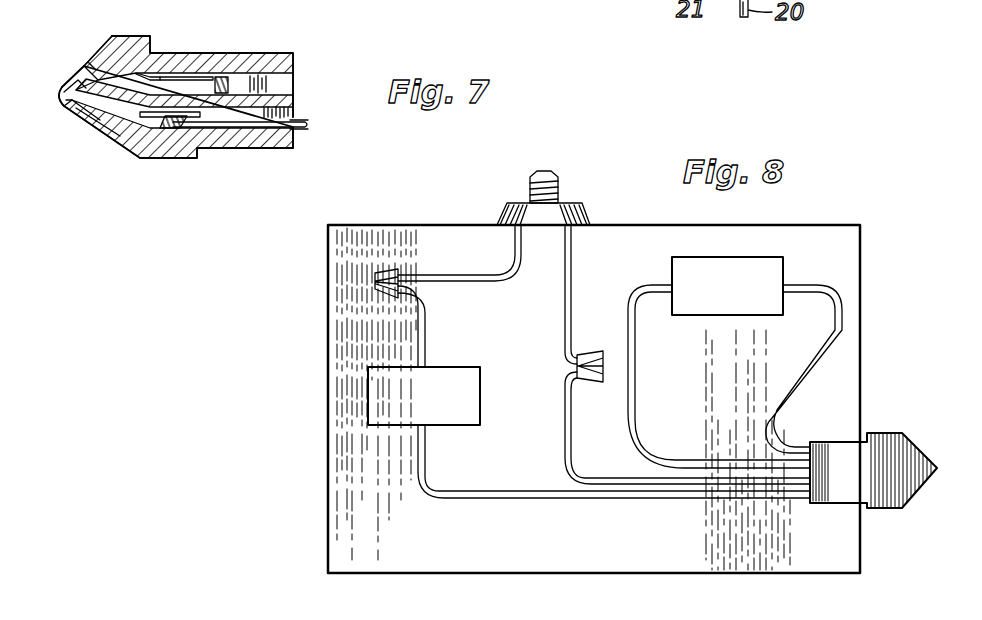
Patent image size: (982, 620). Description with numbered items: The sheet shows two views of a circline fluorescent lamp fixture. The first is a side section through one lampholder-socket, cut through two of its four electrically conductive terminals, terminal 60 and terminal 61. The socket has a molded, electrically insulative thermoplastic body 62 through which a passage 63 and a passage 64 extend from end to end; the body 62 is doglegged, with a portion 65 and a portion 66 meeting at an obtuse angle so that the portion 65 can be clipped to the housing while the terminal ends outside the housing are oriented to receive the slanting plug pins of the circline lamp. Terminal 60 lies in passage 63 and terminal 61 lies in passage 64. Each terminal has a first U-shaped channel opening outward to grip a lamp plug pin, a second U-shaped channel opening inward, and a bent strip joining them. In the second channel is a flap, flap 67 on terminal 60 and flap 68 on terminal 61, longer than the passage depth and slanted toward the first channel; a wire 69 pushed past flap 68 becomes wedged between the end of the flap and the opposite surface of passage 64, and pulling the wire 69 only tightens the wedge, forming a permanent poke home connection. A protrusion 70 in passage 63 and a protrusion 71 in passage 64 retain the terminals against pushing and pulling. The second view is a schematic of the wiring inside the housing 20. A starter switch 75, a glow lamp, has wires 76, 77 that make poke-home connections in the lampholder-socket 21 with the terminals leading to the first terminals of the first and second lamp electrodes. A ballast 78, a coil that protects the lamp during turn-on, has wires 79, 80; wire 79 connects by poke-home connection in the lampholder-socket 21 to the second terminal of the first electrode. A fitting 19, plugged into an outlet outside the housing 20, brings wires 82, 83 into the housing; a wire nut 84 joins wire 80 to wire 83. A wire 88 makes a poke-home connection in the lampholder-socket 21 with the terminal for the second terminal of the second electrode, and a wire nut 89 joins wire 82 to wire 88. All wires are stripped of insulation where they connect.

In FIG. 7, the terminal 60 is at (108, 45).
In FIG. 7, the terminal 61 is at (77, 80).
In FIG. 7, the body 62 is at (165, 178).
In FIG. 7, the passage 63 is at (278, 78).
In FIG. 7, the passage 64 is at (290, 114).
In FIG. 7, the portion 65 is at (257, 148).
In FIG. 7, the portion 66 is at (86, 122).
In FIG. 7, the flap 67 is at (213, 38).
In FIG. 7, the flap 68 is at (174, 134).
In FIG. 7, the wire 69 is at (302, 129).
In FIG. 7, the protrusion 70 is at (155, 75).
In FIG. 7, the protrusion 71 is at (116, 136).
In FIG. 8, the fitting 19 is at (559, 182).
In FIG. 8, the housing 20 is at (327, 436).
In FIG. 8, the lampholder-socket 21 is at (865, 441).
In FIG. 8, the starter switch 75 is at (786, 258).
In FIG. 8, the wire 76 is at (818, 286).
In FIG. 8, the wire 77 is at (637, 346).
In FIG. 8, the ballast 78 is at (481, 393).
In FIG. 8, the wire 79 is at (426, 452).
In FIG. 8, the wire 80 is at (426, 329).
In FIG. 8, the wire 82 is at (572, 272).
In FIG. 8, the wire 83 is at (490, 247).
In FIG. 8, the wire nut 84 is at (392, 298).
In FIG. 8, the wire 88 is at (584, 466).
In FIG. 8, the wire nut 89 is at (607, 343).